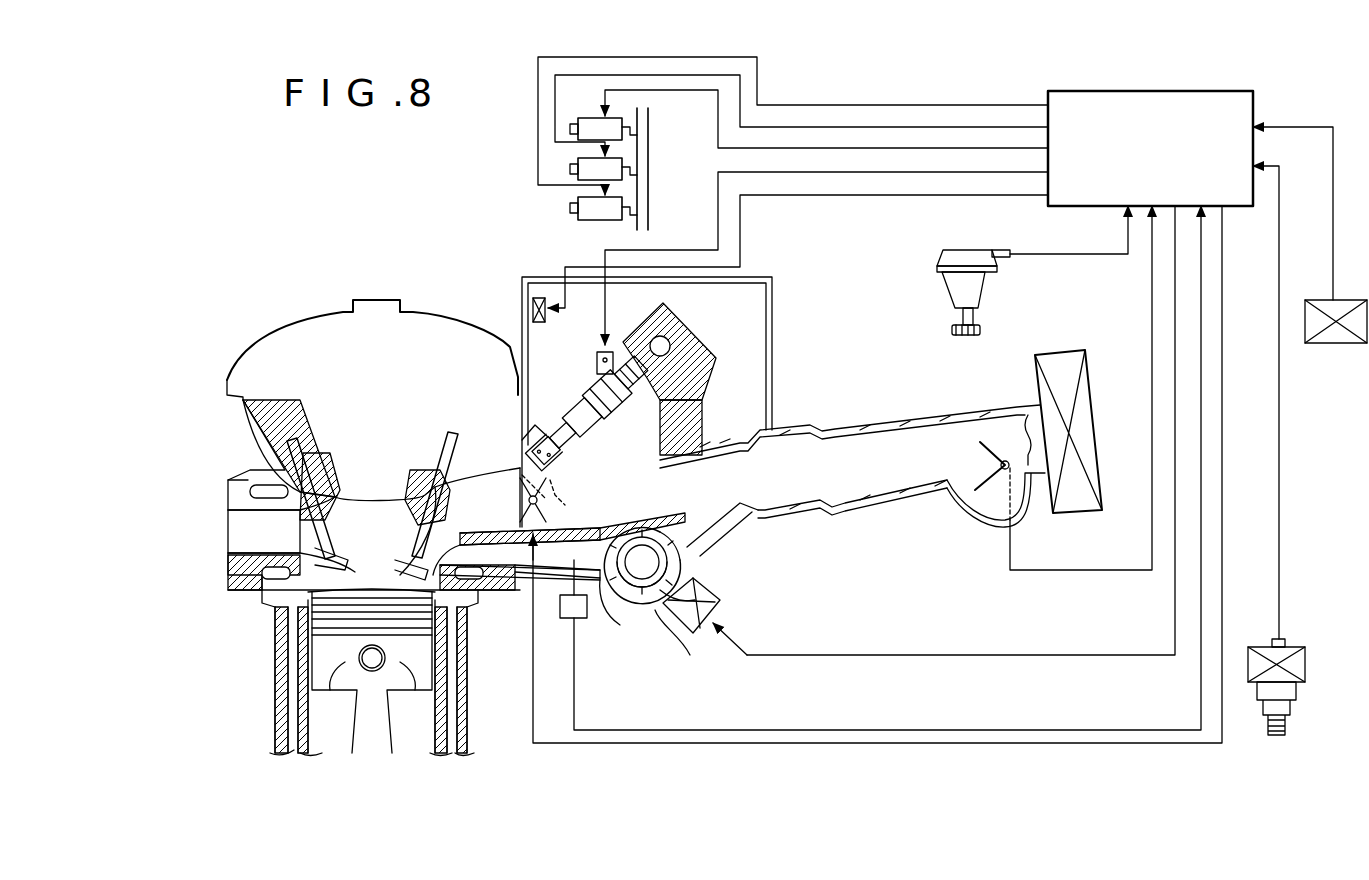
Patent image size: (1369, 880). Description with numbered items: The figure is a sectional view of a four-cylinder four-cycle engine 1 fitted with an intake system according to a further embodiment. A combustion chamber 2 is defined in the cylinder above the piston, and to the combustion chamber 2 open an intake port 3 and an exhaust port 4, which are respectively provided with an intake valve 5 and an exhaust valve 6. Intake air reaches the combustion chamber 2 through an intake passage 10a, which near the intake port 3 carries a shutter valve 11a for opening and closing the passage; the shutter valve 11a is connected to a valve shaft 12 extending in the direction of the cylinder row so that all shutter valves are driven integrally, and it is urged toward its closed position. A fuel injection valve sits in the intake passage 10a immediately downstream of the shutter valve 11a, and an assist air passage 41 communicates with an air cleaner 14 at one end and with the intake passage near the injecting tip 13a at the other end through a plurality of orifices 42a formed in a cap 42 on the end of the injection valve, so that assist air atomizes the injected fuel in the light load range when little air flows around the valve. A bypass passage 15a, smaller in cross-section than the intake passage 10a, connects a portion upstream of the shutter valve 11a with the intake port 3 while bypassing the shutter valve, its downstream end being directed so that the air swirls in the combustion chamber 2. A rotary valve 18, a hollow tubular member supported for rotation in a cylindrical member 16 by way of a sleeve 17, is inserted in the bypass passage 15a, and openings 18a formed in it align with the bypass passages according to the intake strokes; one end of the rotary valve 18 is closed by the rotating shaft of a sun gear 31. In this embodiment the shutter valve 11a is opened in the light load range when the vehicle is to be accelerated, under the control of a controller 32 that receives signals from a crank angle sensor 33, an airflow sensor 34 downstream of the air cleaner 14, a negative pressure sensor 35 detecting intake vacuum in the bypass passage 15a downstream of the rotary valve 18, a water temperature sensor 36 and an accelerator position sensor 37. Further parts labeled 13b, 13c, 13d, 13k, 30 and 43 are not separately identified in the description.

The engine 1 is at (300, 305).
The combustion chamber 2 is at (358, 628).
The intake port 3 is at (468, 532).
The exhaust port 4 is at (268, 540).
The intake valve 5 is at (445, 437).
The exhaust valve 6 is at (300, 440).
The intake passage 10a is at (890, 488).
The shutter valve 11a is at (520, 575).
The valve shaft 12 is at (520, 503).
The injecting tip 13a is at (597, 380).
The fuel injector 13b is at (578, 120).
The fuel injector 13c is at (578, 160).
The fuel injector 13d is at (578, 220).
The injector body / fuel rail 13k is at (583, 426).
The air cleaner 14 is at (1062, 352).
The bypass passage 15a is at (602, 590).
The cylindrical member 16 is at (640, 598).
The sleeve 17 is at (675, 545).
The rotary valve 18 is at (675, 640).
The openings 18a is at (690, 572).
The spark plug electrode 30 is at (558, 499).
The sun gear 31 is at (722, 605).
The controller 32 is at (1118, 91).
The crank angle sensor 33 is at (950, 250).
The airflow sensor 34 is at (987, 526).
The negative pressure sensor 35 is at (560, 612).
The water temperature sensor 36 is at (1316, 635).
The accelerator position sensor 37 is at (1342, 343).
The assist air passage 41 is at (727, 282).
The cap 42 is at (556, 463).
The orifices 42a is at (545, 432).
The ignition coil 43 is at (530, 298).